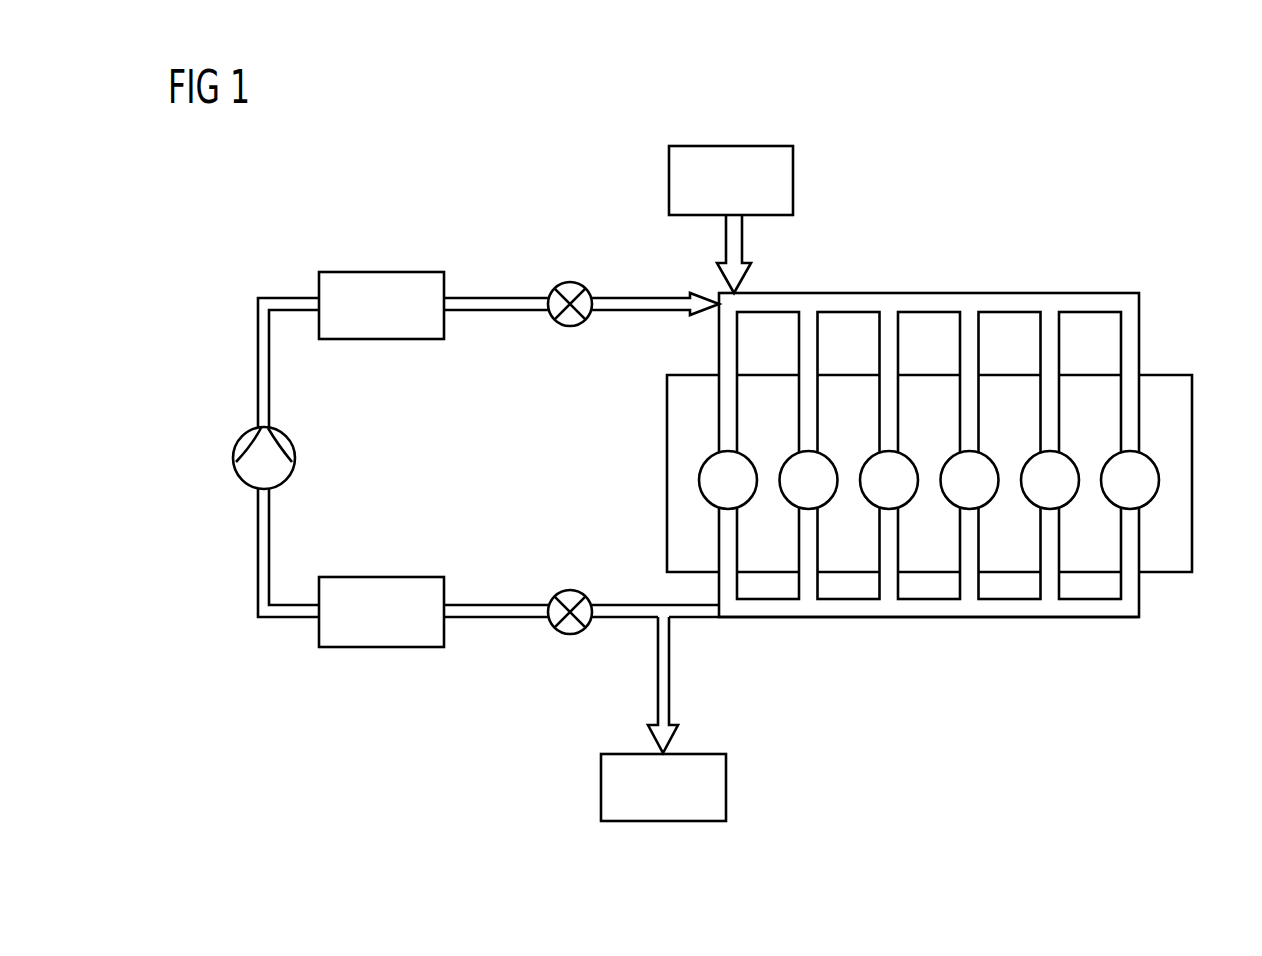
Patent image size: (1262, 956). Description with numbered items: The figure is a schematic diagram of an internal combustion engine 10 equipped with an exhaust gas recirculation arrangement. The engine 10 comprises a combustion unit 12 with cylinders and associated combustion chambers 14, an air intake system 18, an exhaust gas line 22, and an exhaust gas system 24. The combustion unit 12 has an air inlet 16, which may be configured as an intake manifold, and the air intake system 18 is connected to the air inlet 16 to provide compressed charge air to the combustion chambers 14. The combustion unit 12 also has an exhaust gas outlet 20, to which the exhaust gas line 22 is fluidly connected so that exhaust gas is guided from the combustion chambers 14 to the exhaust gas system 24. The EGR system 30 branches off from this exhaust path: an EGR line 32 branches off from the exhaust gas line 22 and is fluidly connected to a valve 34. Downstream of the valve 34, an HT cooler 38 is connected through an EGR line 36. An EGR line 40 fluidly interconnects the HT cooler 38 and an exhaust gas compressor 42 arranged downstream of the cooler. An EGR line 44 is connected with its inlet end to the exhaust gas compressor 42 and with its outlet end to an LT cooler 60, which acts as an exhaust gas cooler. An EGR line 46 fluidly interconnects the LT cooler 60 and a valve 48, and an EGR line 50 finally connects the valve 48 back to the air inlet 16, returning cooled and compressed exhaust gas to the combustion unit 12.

The internal combustion engine 10 is at (976, 130).
The combustion unit 12 is at (1192, 470).
The combustion chambers 14 is at (794, 468).
The air inlet 16 is at (1000, 302).
The air intake system 18 is at (793, 178).
The exhaust gas outlet 20 is at (1008, 608).
The exhaust gas line 22 is at (690, 612).
The exhaust gas system 24 is at (726, 786).
The EGR system 30 is at (250, 208).
The EGR line 32 is at (632, 612).
The valve 34 is at (570, 635).
The EGR line 36 is at (500, 618).
The HT cooler 38 is at (385, 648).
The EGR line 40 is at (258, 576).
The exhaust gas compressor 42 is at (236, 446).
The EGR line 44 is at (258, 366).
The EGR line 46 is at (498, 302).
The valve 48 is at (570, 281).
The EGR line 50 is at (662, 302).
The LT cooler 60 is at (383, 272).